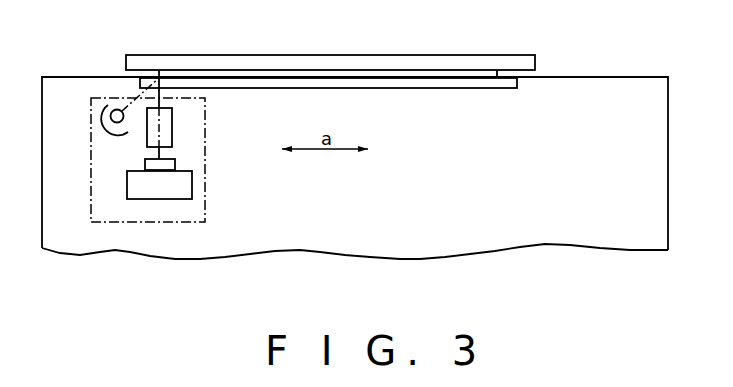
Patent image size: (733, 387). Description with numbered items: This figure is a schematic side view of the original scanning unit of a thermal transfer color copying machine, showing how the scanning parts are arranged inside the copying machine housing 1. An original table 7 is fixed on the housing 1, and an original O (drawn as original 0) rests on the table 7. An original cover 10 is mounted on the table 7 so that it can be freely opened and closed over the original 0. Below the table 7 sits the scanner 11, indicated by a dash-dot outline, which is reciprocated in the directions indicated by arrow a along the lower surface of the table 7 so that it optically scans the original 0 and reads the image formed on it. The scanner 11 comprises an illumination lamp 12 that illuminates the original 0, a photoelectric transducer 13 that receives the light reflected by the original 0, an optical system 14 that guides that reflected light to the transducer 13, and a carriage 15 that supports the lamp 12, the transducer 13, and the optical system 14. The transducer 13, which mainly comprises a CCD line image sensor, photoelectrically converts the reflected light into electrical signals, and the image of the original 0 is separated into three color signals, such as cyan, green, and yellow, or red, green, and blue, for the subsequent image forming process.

The copying machine housing 1 is at (668, 128).
The original cover 10 is at (485, 63).
The original 0 is at (360, 75).
The original table 7 is at (455, 89).
The scanner 11 is at (138, 224).
The illumination lamp 12 is at (99, 122).
The photoelectric transducer 13 is at (175, 165).
The optical system 14 is at (172, 138).
The carriage 15 is at (187, 188).